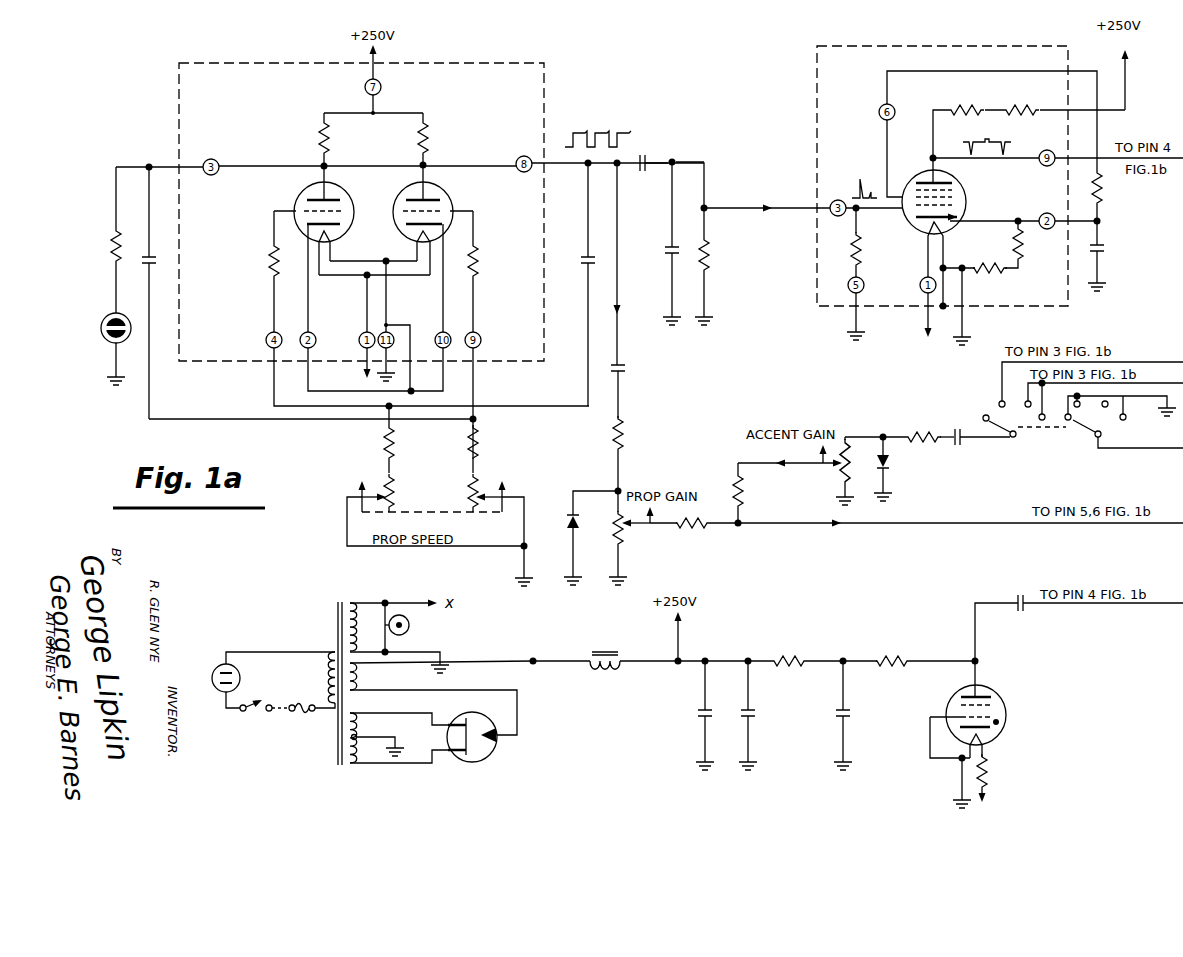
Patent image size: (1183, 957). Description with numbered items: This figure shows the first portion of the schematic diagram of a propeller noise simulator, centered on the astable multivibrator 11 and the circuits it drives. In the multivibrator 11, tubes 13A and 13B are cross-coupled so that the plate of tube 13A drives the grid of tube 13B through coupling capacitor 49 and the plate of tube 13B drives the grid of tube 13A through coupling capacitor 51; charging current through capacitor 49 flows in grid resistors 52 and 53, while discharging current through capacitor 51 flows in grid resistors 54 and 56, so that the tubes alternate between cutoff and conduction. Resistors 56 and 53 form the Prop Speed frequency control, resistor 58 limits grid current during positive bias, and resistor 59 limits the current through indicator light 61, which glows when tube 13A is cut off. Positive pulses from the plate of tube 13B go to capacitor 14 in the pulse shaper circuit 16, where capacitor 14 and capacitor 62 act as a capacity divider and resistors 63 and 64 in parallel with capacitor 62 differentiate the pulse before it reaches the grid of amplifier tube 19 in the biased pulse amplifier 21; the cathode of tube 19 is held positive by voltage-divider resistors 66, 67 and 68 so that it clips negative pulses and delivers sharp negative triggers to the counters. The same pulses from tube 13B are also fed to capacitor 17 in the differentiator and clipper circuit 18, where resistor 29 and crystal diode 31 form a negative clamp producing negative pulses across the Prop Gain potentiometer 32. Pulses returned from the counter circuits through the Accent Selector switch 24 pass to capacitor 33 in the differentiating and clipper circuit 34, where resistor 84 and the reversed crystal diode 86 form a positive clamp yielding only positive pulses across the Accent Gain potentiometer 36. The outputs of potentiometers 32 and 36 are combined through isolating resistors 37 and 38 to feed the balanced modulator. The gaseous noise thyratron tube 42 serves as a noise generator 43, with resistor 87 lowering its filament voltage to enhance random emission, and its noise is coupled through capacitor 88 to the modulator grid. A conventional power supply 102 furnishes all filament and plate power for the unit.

The astable multivibrator 11 is at (520, 63).
The tube 13A is at (303, 189).
The tube 13B is at (441, 191).
The resistor 58 is at (481, 253).
The resistor 59 is at (112, 246).
The coupling capacitor 49 is at (156, 262).
The indicator light 61 is at (104, 335).
The coupling capacitor 51 is at (582, 255).
The capacitor 14 is at (643, 171).
The pulse shaper circuit 16 is at (673, 146).
The capacitor 62 is at (665, 252).
The resistor 64 is at (712, 250).
The biased pulse amplifier 21 is at (972, 46).
The amplifier tube 19 is at (963, 186).
The resistor 63 is at (866, 250).
The voltage-divider resistor 68 is at (985, 263).
The voltage-divider resistor 67 is at (1025, 244).
The voltage-divider resistor 66 is at (1101, 192).
The capacitor 17 is at (622, 376).
The differentiator and clipper circuit 18 is at (648, 424).
The resistor 29 is at (625, 444).
The crystal diode 31 is at (566, 515).
The Prop Gain potentiometer 32 is at (623, 542).
The isolating resistor 37 is at (700, 528).
The isolating resistor 38 is at (744, 496).
The Accent Gain potentiometer 36 is at (839, 476).
The differentiating and clipper circuit 34 is at (875, 420).
The resistor 84 is at (920, 430).
The capacitor 33 is at (958, 420).
The crystal diode 86 is at (887, 466).
The Accent Selector switch 24 is at (1030, 457).
The grid resistor 54 is at (384, 440).
The grid resistor 52 is at (488, 447).
The grid resistor 56 is at (395, 493).
The grid resistor 53 is at (468, 495).
The gaseous noise thyratron tube 42 is at (1007, 711).
The noise generator 43 is at (920, 727).
The resistor 87 is at (990, 778).
The capacitor 88 is at (1020, 612).
The power supply 102 is at (540, 758).